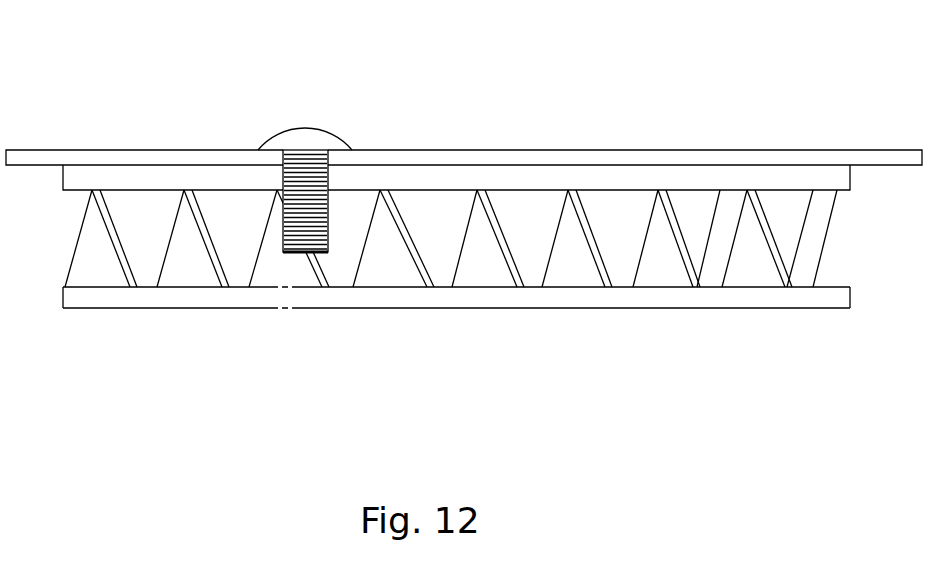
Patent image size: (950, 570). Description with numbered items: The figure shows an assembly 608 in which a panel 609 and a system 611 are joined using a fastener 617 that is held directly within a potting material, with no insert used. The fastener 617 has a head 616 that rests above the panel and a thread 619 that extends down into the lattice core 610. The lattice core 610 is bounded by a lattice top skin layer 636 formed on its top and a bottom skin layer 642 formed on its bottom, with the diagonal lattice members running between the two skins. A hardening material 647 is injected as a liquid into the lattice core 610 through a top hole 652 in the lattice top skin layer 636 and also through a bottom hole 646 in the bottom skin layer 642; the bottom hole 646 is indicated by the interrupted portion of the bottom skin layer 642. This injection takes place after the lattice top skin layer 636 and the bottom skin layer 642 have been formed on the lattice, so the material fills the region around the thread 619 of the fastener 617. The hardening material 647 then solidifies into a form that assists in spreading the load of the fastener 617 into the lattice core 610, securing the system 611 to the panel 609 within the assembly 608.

The assembly 608 is at (464, 212).
The panel 609 is at (100, 120).
The head 616 is at (292, 142).
The fastener 617 is at (312, 212).
The thread 619 is at (310, 194).
The lattice core 610 is at (451, 212).
The lattice top skin layer 636 is at (656, 167).
The top hole 652 is at (277, 190).
The bottom hole 646 is at (273, 308).
The hardening material 647 is at (337, 200).
The bottom skin layer 642 is at (456, 347).
The system 611 is at (610, 318).